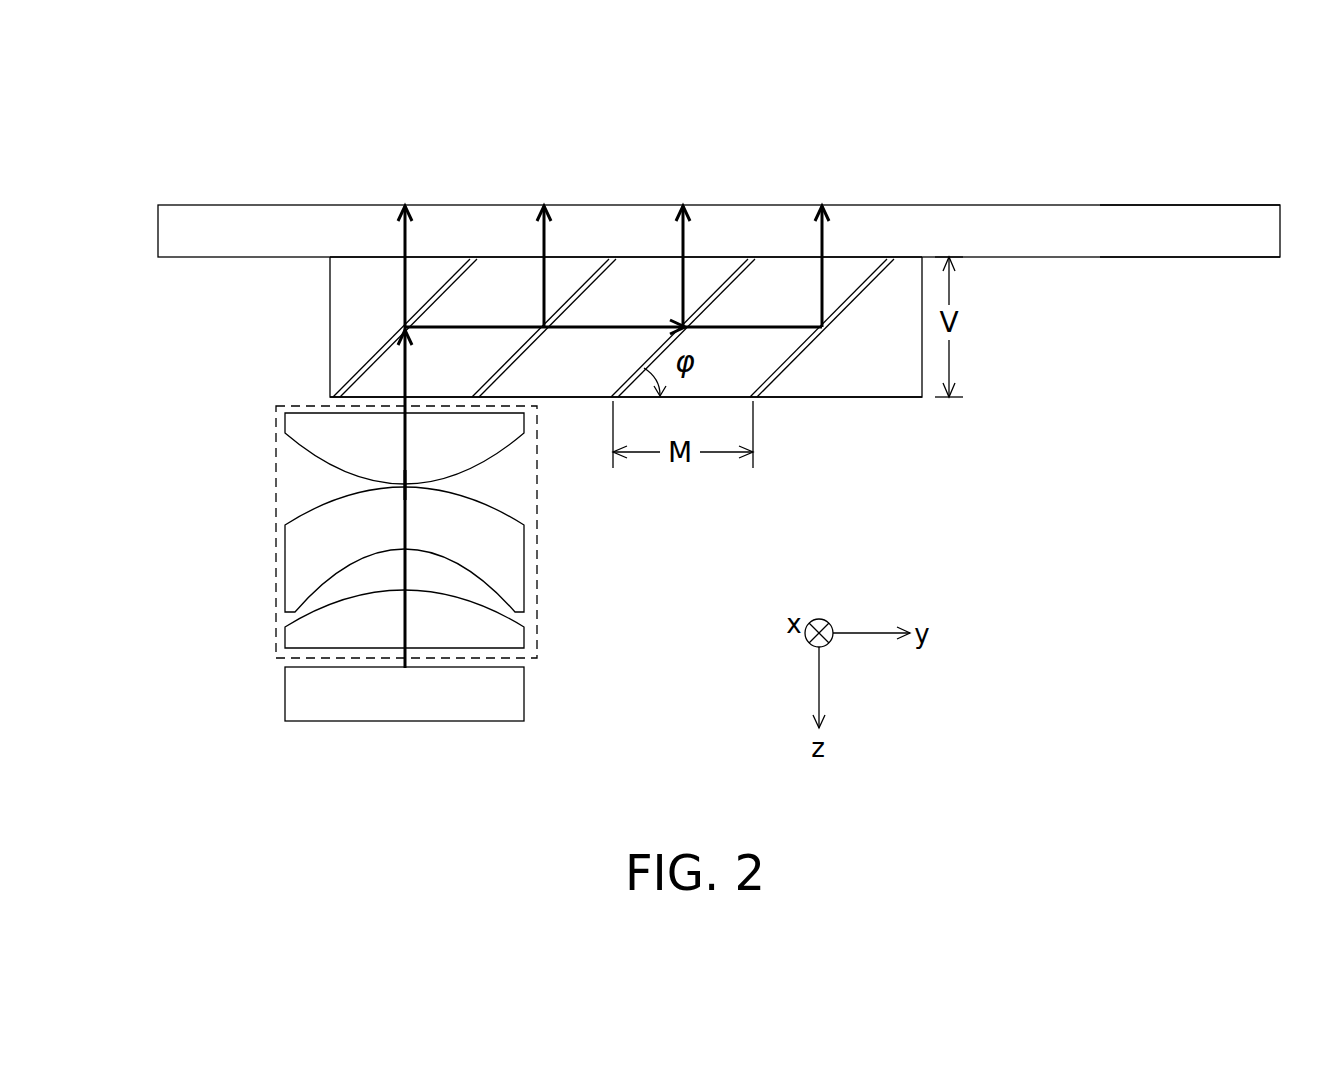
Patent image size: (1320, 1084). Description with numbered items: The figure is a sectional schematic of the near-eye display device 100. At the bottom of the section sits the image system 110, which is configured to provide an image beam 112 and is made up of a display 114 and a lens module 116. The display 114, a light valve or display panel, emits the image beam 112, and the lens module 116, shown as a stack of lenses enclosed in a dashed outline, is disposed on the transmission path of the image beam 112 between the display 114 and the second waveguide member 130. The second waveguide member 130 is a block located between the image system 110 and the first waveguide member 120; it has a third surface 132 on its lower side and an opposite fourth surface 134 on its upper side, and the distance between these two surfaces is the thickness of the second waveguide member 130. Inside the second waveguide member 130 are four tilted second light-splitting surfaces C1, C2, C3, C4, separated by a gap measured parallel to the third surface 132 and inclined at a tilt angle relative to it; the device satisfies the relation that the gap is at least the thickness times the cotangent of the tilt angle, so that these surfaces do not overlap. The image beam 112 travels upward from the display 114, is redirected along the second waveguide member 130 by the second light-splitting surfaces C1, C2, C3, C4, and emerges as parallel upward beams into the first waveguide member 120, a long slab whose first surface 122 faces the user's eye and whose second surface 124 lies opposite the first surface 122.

The near-eye display device 100 is at (1289, 713).
The image system 110 is at (176, 565).
The image beam 112 is at (405, 487).
The display 114 is at (285, 695).
The lens module 116 is at (276, 590).
The first waveguide member 120 is at (246, 205).
The first surface 122 is at (1160, 257).
The second surface 124 is at (1158, 205).
The second waveguide member 130 is at (330, 325).
The third surface 132 is at (837, 398).
The fourth surface 134 is at (803, 256).
The second light-splitting surface C1 is at (465, 291).
The second light-splitting surface C2 is at (580, 283).
The second light-splitting surface C3 is at (722, 283).
The second light-splitting surface C4 is at (862, 283).